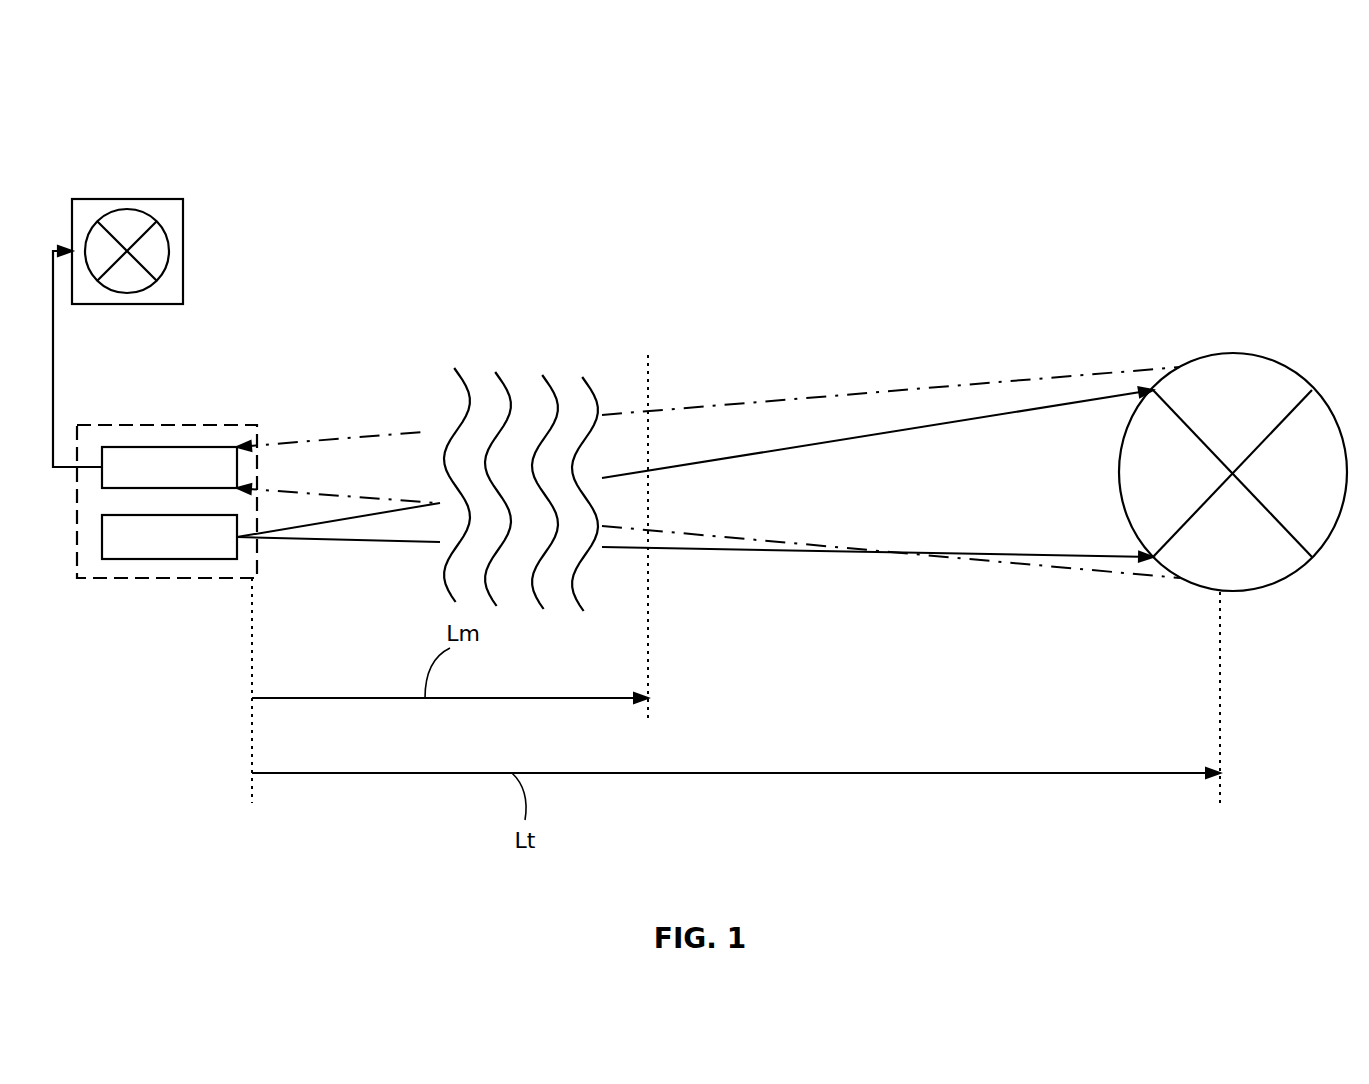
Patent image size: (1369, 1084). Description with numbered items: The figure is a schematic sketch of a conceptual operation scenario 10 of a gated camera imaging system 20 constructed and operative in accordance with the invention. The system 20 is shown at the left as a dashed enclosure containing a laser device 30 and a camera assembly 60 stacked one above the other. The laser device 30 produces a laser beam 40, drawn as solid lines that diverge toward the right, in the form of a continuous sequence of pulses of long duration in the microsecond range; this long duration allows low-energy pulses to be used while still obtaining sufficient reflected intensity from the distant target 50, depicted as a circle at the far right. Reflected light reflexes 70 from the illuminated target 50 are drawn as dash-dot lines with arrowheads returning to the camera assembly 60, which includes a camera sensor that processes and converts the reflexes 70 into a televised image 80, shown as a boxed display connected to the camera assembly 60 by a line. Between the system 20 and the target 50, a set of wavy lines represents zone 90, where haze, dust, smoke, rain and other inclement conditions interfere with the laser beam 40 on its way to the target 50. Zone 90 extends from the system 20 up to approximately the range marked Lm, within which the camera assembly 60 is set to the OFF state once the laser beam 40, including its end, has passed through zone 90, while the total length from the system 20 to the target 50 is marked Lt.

The conceptual operation scenario 10 is at (692, 232).
The gated camera imaging system 20 is at (77, 497).
The laser device 30 is at (165, 559).
The laser beam 40 is at (790, 448).
The distant target 50 is at (1327, 402).
The camera assembly 60 is at (213, 447).
The reflected light reflexes 70 is at (1110, 572).
The televised image 80 is at (126, 199).
The zone 90 is at (530, 367).